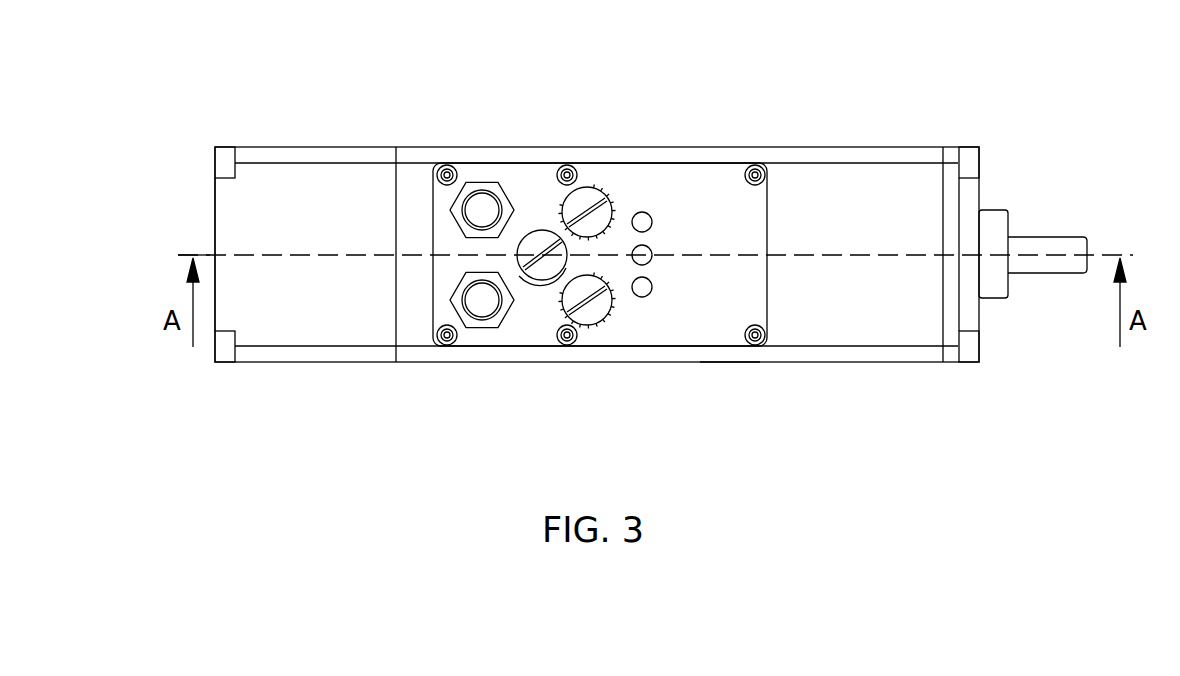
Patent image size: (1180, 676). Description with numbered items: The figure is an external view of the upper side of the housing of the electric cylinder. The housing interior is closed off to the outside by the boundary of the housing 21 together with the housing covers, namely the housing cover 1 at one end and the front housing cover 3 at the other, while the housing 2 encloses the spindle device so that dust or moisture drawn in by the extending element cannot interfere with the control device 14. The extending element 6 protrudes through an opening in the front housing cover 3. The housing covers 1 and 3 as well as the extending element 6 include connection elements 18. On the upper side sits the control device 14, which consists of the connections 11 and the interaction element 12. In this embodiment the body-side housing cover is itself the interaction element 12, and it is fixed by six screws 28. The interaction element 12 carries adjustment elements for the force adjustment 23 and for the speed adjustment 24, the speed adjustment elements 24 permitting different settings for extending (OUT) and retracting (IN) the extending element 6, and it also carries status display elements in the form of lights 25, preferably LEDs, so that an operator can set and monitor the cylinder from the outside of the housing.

The housing cover 1 is at (250, 152).
The housing 2 is at (827, 335).
The front housing cover 3 is at (955, 155).
The extending element 6 is at (992, 215).
The connections 11 is at (480, 318).
The interaction element 12 is at (630, 180).
The control device 14 is at (717, 170).
The connection elements 18 is at (227, 202).
The housing 21 is at (732, 390).
The force adjustment element 23 is at (528, 265).
The speed adjustment elements 24 is at (592, 188).
The lights 25 is at (642, 297).
The screws 28 is at (447, 165).